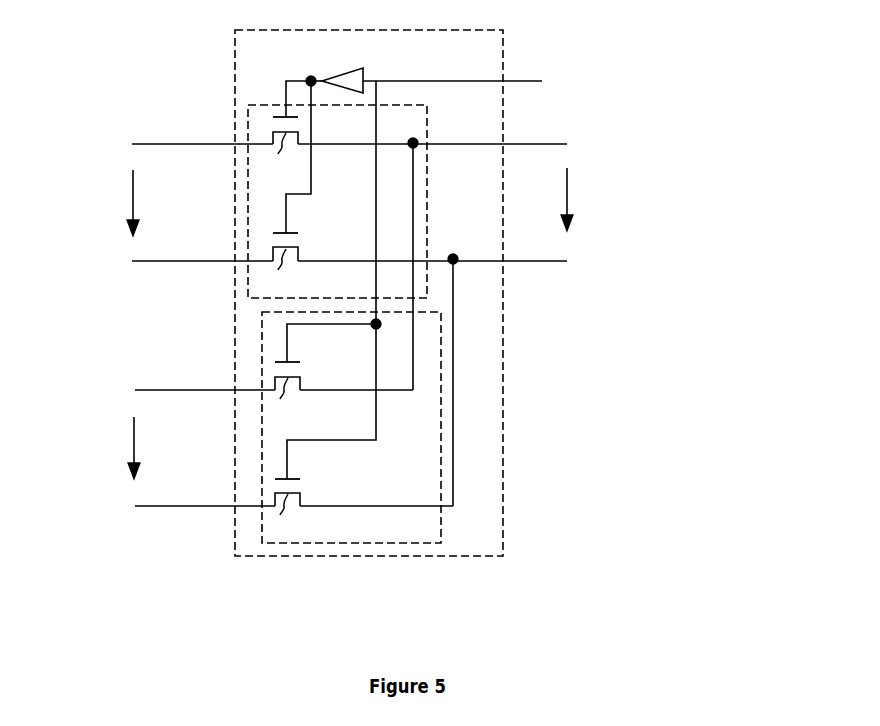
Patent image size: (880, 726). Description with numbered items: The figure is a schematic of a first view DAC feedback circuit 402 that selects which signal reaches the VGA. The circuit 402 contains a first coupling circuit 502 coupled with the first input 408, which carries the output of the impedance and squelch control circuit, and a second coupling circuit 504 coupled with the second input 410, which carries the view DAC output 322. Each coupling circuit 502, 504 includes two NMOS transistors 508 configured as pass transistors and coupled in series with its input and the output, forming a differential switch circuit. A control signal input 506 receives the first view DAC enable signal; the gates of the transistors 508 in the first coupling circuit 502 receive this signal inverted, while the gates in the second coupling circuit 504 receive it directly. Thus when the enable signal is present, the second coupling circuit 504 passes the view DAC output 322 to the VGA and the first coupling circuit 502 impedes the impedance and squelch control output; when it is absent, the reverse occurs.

The first view DAC feedback circuit 402 is at (494, 53).
The first coupling circuit 502 is at (418, 129).
The second coupling circuit 504 is at (351, 427).
The control signal input 506 is at (518, 81).
The NMOS transistors 508 is at (277, 329).
The first input 408 is at (210, 144).
The second input 410 is at (212, 392).
The view DAC output 322 is at (517, 144).